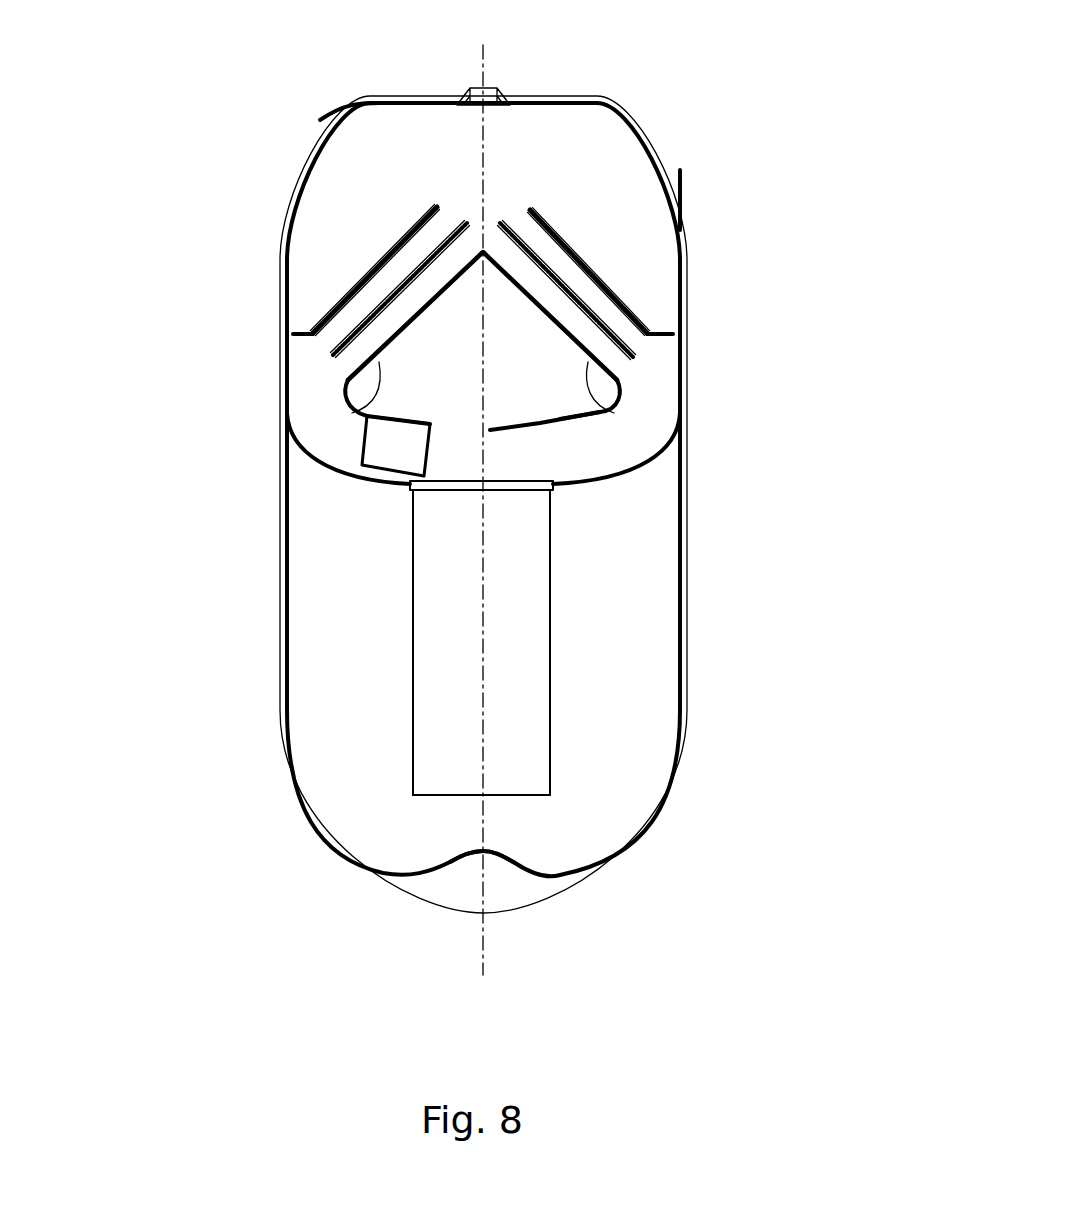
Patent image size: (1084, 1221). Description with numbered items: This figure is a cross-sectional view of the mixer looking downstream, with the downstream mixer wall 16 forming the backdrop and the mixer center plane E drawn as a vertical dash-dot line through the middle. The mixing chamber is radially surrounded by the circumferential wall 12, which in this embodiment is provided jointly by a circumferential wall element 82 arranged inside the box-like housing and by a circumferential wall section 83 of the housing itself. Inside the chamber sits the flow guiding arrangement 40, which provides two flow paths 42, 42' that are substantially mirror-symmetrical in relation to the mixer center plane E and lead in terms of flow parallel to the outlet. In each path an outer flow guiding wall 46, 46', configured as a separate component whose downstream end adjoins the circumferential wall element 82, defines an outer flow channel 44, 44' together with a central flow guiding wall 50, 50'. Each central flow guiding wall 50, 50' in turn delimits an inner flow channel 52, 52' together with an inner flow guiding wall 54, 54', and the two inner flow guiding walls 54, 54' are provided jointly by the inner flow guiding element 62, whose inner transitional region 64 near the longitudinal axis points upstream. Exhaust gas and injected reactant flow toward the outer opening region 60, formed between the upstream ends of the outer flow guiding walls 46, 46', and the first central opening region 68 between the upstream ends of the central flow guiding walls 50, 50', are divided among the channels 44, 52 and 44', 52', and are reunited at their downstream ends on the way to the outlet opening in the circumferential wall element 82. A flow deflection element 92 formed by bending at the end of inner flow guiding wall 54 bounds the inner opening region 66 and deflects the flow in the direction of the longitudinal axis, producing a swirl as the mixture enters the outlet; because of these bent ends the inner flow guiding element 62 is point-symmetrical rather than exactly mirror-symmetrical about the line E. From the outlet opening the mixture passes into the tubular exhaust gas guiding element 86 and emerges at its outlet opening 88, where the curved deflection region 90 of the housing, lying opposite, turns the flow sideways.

The circumferential wall 12 is at (680, 253).
The downstream mixer wall 16 is at (635, 202).
The flow guiding arrangement 40 is at (383, 188).
The flow path 42 is at (252, 248).
The flow path 42' is at (767, 241).
The outer flow channel 44 is at (296, 270).
The outer flow channel 44' is at (687, 287).
The outer flow guiding wall 46 is at (318, 289).
The outer flow guiding wall 46' is at (661, 290).
The central flow guiding wall 50 is at (261, 375).
The central flow guiding wall 50' is at (714, 385).
The inner flow channel 52 is at (252, 397).
The inner flow channel 52' is at (725, 415).
The inner flow guiding wall 54 is at (276, 435).
The inner flow guiding wall 54' is at (689, 445).
The outer opening region 60 is at (513, 208).
The inner flow guiding element 62 is at (576, 417).
The inner transitional region 64 is at (483, 253).
The inner opening region 66 is at (462, 445).
The first central opening region 68 is at (488, 222).
The circumferential wall element 82 is at (305, 462).
The circumferential wall section 83 is at (313, 157).
The exhaust gas guiding element 86 is at (552, 633).
The outlet opening 88 is at (518, 797).
The deflection region 90 is at (458, 855).
The flow deflection element 92 is at (393, 455).
The mixer center plane E is at (489, 946).